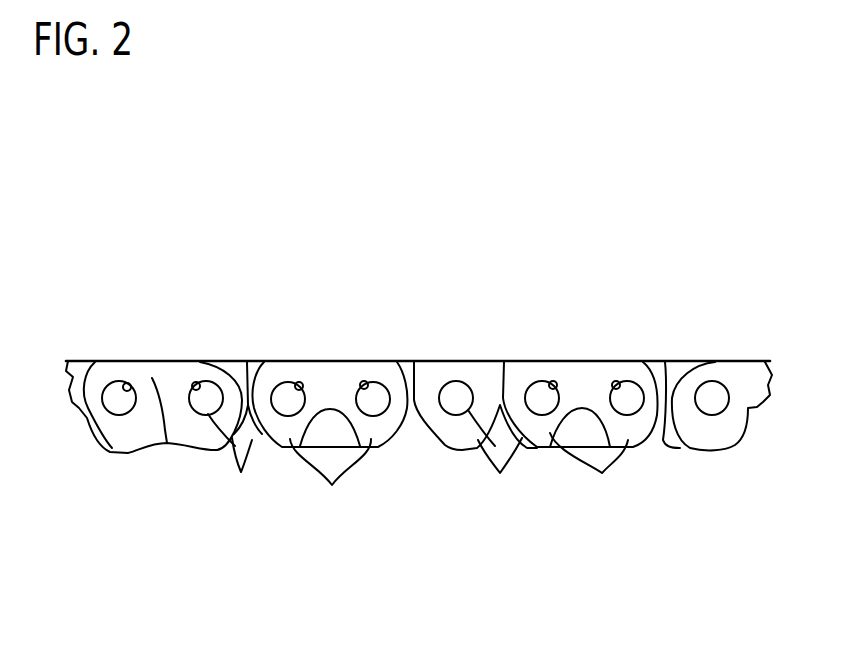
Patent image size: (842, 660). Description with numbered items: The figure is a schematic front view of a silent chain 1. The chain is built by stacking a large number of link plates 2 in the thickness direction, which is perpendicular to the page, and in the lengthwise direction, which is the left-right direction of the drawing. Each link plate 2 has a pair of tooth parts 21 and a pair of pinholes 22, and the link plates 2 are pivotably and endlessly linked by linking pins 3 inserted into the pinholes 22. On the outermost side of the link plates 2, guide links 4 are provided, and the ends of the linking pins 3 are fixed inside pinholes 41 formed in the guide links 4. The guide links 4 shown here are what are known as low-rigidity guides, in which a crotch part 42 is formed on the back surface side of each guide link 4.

The silent chain 1 is at (450, 542).
The link plate 2 is at (296, 366).
The tooth part 21 is at (332, 485).
The pinhole 22 is at (366, 385).
The linking pin 3 is at (108, 408).
The guide link 4 is at (140, 452).
The pinhole 41 is at (195, 387).
The crotch part 42 is at (167, 445).